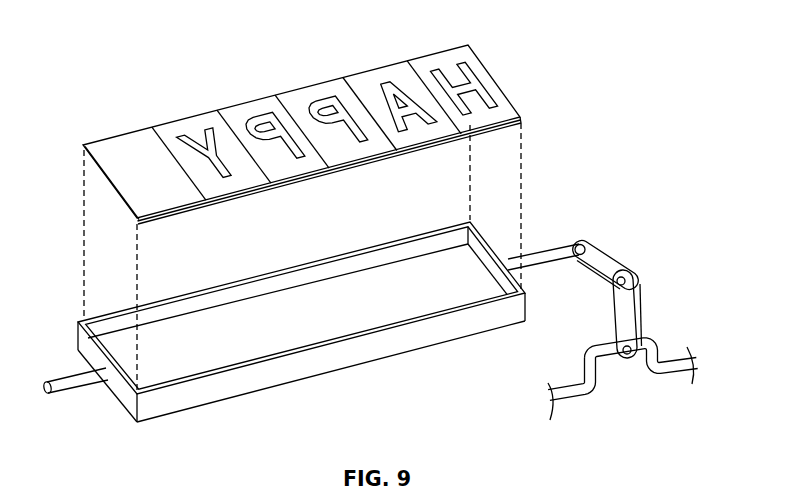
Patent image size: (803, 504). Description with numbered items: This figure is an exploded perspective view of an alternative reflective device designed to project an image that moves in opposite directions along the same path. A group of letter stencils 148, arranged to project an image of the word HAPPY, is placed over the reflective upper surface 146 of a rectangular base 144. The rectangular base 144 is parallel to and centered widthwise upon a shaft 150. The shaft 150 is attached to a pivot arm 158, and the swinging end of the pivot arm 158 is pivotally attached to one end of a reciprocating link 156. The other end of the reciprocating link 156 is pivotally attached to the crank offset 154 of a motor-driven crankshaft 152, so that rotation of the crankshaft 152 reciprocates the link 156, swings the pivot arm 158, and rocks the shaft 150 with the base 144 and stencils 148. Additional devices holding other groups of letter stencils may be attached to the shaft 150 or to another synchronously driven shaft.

The rectangular base 144 is at (155, 403).
The reflective upper surface 146 is at (283, 318).
The letter stencils 148 is at (372, 78).
The shaft 150 is at (543, 252).
The motor-driven crankshaft 152 is at (560, 400).
The crank offset 154 is at (645, 350).
The reciprocating link 156 is at (613, 305).
The pivot arm 158 is at (613, 252).